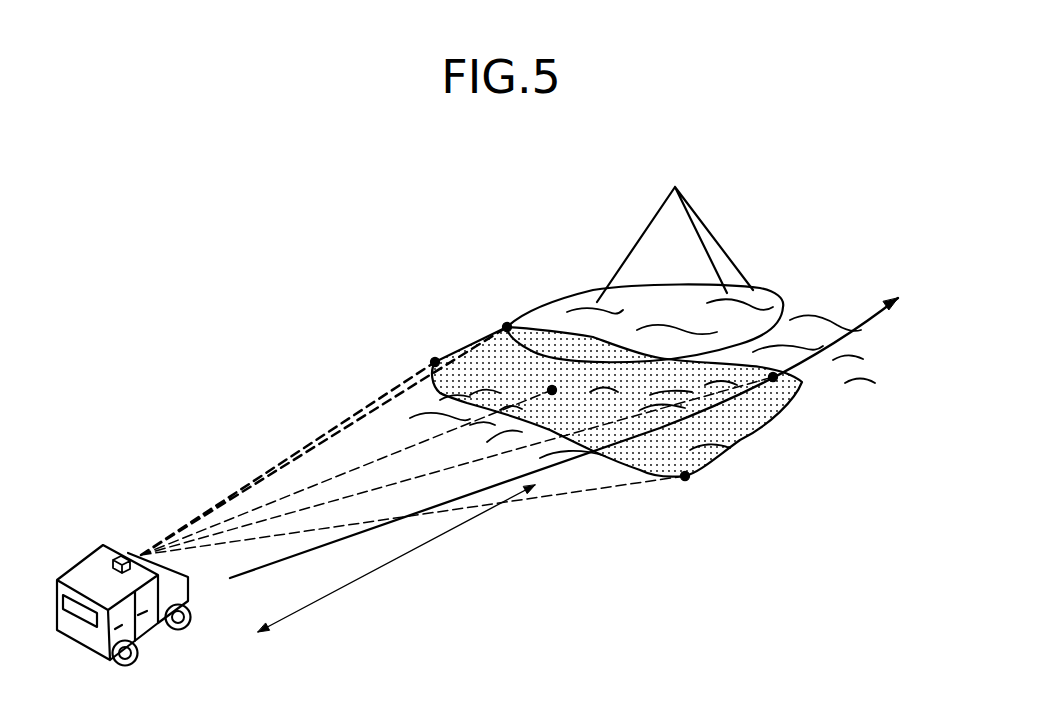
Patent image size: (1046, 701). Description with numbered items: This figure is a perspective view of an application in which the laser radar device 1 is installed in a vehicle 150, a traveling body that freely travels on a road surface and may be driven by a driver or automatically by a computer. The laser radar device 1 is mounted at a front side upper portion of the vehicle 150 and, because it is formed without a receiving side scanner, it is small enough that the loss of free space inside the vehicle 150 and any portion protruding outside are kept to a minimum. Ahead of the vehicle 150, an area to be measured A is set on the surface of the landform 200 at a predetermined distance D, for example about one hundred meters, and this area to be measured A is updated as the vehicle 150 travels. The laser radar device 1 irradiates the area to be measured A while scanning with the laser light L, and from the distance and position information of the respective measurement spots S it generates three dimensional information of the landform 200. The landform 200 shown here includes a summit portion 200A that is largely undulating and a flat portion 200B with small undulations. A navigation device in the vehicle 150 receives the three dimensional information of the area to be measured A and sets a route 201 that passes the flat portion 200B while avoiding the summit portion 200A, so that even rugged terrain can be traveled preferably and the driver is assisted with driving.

The laser radar device 1 is at (122, 556).
The vehicle 150 is at (92, 568).
The landform 200 is at (763, 300).
The summit portion 200A is at (680, 212).
The flat portion 200B is at (875, 370).
The route 201 is at (858, 332).
The area to be measured A is at (745, 425).
The measurement spots S is at (432, 358).
The laser light L is at (323, 432).
The predetermined distance D is at (378, 568).